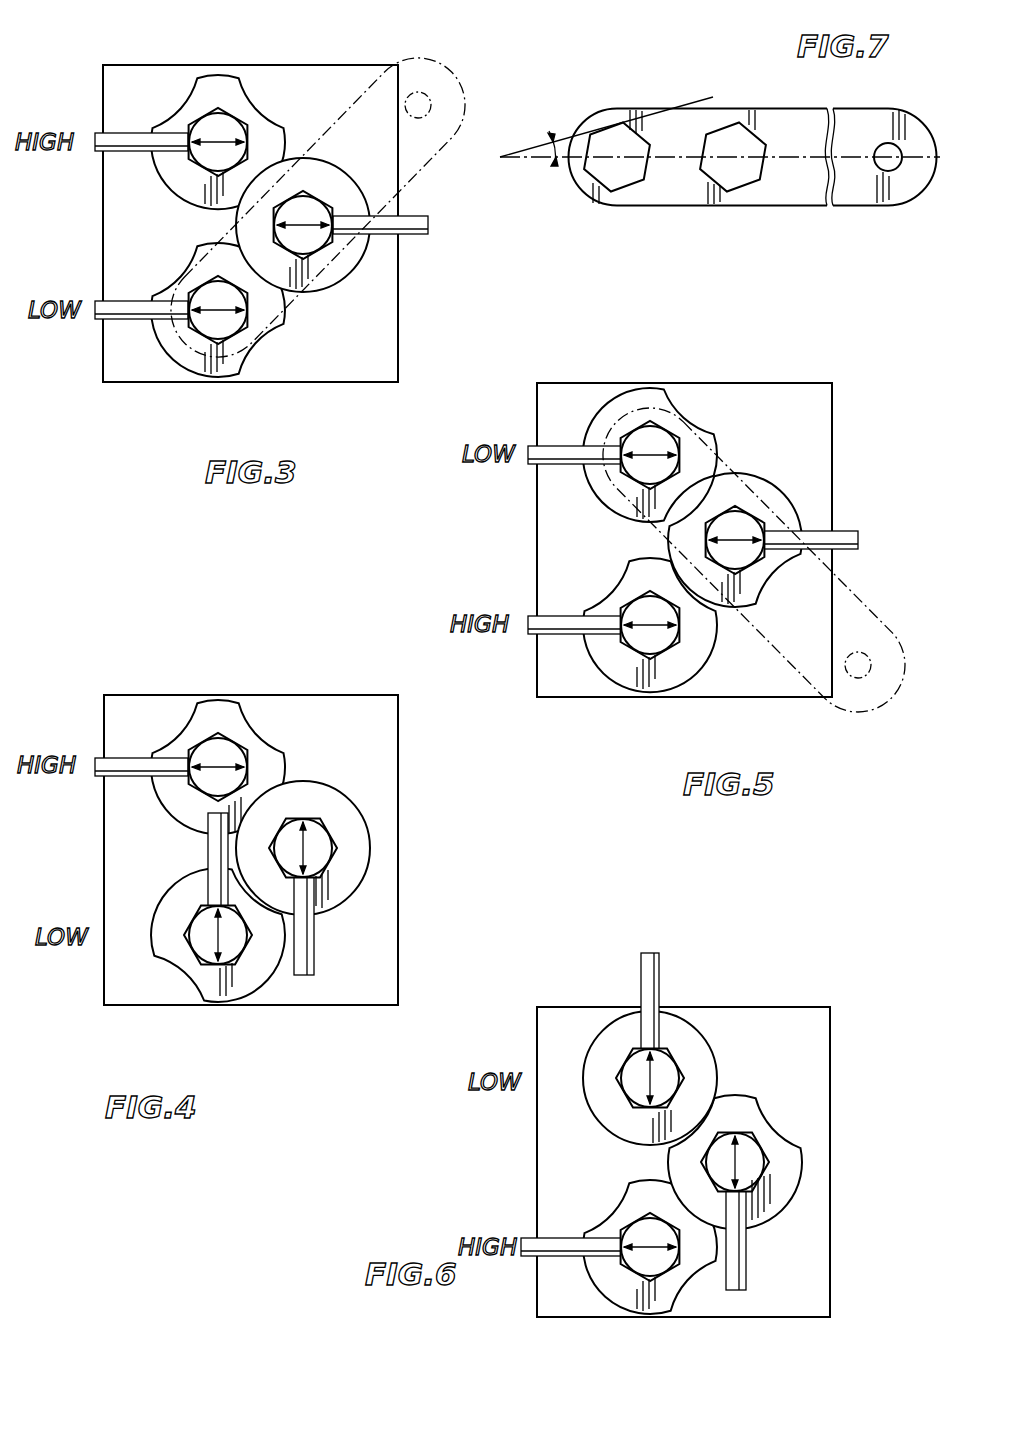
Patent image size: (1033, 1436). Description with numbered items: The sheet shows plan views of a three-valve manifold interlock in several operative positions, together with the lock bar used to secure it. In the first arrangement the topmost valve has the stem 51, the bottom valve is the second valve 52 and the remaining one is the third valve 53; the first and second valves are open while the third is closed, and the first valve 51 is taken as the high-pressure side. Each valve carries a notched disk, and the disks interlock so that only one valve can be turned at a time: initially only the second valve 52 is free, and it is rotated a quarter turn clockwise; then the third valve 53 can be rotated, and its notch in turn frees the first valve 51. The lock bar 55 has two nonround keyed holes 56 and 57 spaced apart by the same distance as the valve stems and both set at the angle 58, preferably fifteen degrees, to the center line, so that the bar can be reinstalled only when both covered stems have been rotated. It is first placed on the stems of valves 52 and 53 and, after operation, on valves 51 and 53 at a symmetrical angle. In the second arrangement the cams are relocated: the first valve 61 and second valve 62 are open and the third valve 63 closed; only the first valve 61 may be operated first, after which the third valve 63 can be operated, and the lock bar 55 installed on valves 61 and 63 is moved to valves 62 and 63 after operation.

In FIG. 3, the first valve stem 51 is at (202, 127).
In FIG. 4, the first valve stem 51 is at (222, 748).
In FIG. 3, the second valve 52 is at (237, 321).
In FIG. 4, the second valve 52 is at (227, 950).
In FIG. 3, the third valve 53 is at (317, 210).
In FIG. 4, the third valve 53 is at (320, 843).
In FIG. 3, the lock bar 55 is at (367, 90).
In FIG. 5, the lock bar 55 is at (866, 606).
In FIG. 7, the lock bar 55 is at (790, 192).
In FIG. 7, the keyed hole 56 is at (608, 122).
In FIG. 7, the keyed hole 57 is at (728, 120).
In FIG. 7, the angle 58 is at (553, 150).
In FIG. 5, the first valve 61 is at (642, 437).
In FIG. 6, the first valve 61 is at (663, 1060).
In FIG. 5, the second valve 62 is at (652, 643).
In FIG. 6, the second valve 62 is at (633, 1227).
In FIG. 5, the third valve 63 is at (745, 520).
In FIG. 6, the third valve 63 is at (748, 1143).